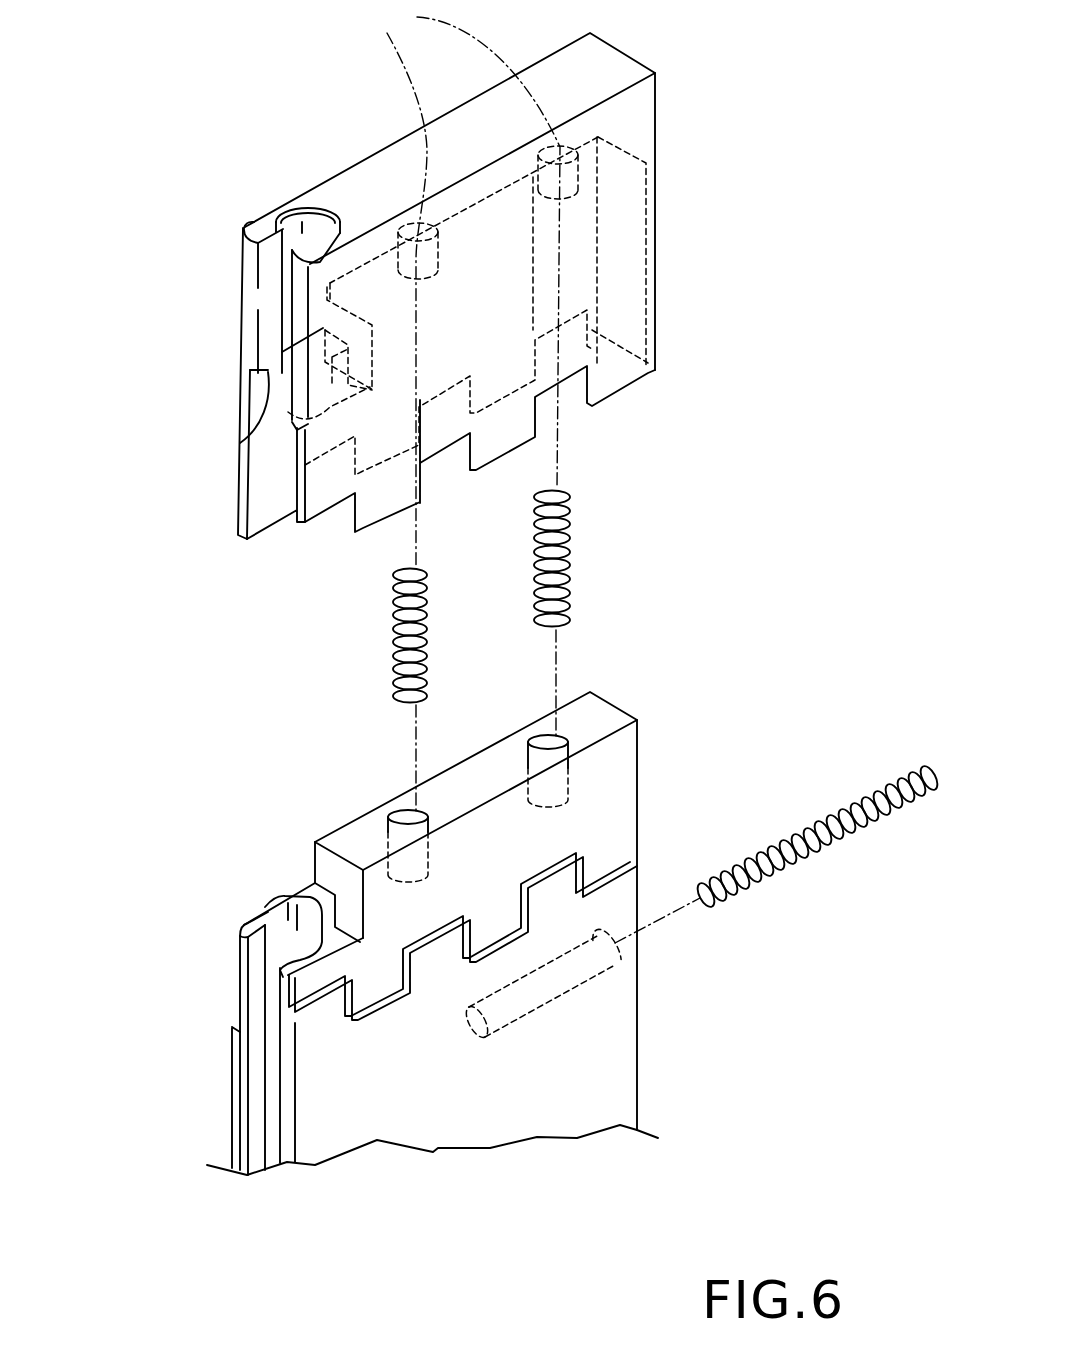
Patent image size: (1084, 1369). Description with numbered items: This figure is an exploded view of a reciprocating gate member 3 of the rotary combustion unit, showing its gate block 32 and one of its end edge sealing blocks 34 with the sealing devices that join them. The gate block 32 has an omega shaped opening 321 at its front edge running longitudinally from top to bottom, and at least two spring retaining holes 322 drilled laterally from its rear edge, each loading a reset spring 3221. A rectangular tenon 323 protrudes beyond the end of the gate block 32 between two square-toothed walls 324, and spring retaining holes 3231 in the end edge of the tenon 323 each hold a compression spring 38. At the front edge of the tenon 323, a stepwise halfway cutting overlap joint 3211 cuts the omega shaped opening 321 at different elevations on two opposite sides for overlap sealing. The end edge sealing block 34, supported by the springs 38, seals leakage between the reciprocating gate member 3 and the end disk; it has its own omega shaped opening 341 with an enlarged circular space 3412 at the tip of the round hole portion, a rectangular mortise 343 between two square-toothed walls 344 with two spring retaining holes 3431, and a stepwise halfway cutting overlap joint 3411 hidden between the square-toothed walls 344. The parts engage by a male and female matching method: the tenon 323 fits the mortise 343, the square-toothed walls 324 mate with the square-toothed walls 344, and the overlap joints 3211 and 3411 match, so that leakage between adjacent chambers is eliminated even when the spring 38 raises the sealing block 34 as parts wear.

The reciprocating gate member 3 is at (480, 1180).
The gate block 32 is at (647, 786).
The omega shaped opening 321 is at (275, 1085).
The stepwise halfway cutting overlap joint 3211 is at (280, 975).
The spring retaining hole 322 is at (620, 951).
The reset spring 3221 is at (806, 861).
The rectangular tenon 323 is at (605, 692).
The spring retaining hole 3231 is at (548, 740).
The square-toothed wall 324 is at (563, 890).
The end edge sealing block 34 is at (663, 142).
The omega shaped opening 341 is at (283, 298).
The stepwise halfway cutting overlap joint 3411 is at (266, 378).
The enlarged circular space 3412 is at (292, 218).
The rectangular mortise 343 is at (640, 235).
The spring retaining hole 3431 is at (458, 282).
The square-toothed wall 344 is at (507, 433).
The compression spring 38 is at (393, 625).